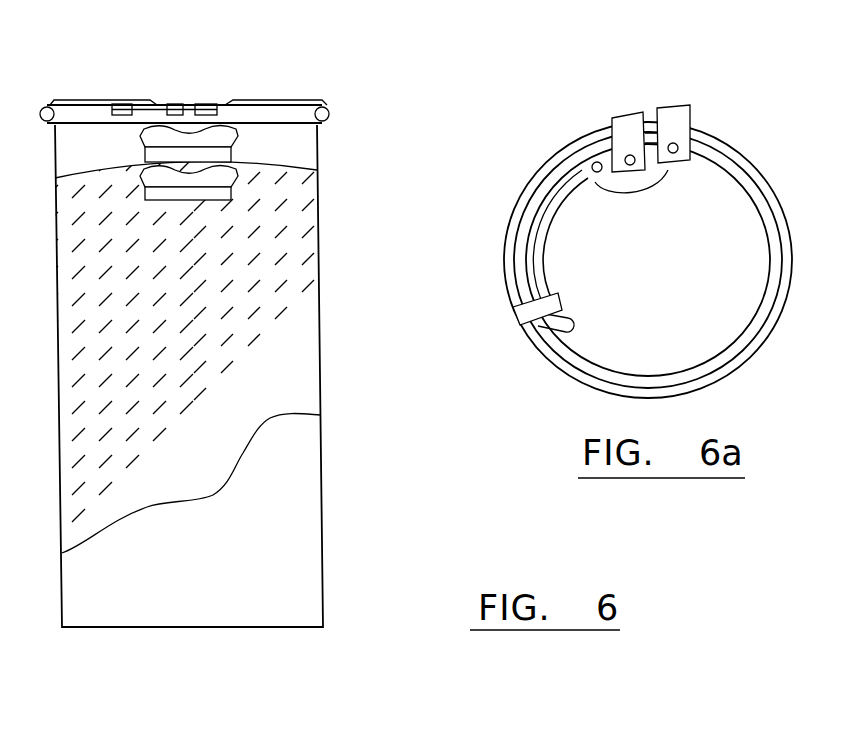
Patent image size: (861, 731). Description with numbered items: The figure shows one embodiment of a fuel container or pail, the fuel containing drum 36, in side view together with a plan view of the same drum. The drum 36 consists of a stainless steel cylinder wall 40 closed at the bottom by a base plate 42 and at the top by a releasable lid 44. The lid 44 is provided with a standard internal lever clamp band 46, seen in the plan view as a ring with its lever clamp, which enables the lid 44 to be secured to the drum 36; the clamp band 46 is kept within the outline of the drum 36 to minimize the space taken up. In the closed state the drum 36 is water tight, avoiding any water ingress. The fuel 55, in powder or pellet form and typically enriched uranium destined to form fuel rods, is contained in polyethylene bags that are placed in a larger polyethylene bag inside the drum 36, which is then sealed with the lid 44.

In FIG. 6, the fuel containing drum 36 is at (329, 488).
In FIG. 6, the stainless steel cylinder wall 40 is at (297, 595).
In FIG. 6, the base plate 42 is at (230, 627).
In FIG. 6, the releasable lid 44 is at (270, 115).
In FIG. 6A, the releasable lid 44 is at (727, 313).
In FIG. 6A, the internal lever clamp band 46 is at (560, 192).
In FIG. 6, the fuel 55 is at (282, 302).